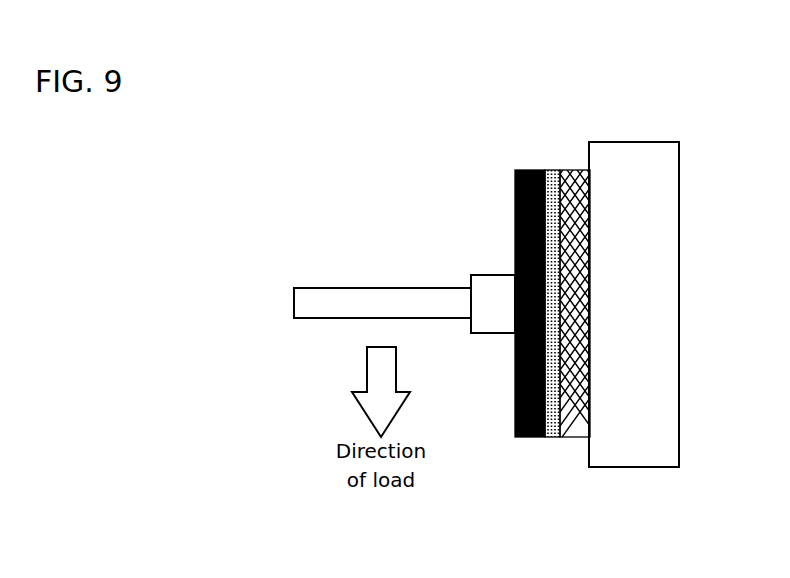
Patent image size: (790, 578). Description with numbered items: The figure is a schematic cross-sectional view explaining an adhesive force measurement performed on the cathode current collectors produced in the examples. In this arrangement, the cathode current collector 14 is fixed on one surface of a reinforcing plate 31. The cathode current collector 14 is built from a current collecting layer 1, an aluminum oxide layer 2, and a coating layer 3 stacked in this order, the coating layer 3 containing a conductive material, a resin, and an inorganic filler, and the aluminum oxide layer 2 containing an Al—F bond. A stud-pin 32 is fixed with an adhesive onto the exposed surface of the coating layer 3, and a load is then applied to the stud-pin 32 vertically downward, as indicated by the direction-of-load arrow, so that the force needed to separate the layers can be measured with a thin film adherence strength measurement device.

The current collecting layer 1 is at (576, 438).
The aluminum oxide layer 2 is at (552, 438).
The coating layer 3 is at (531, 438).
The cathode current collector 14 is at (513, 517).
The reinforcing plate 31 is at (633, 438).
The stud-pin 32 is at (382, 305).